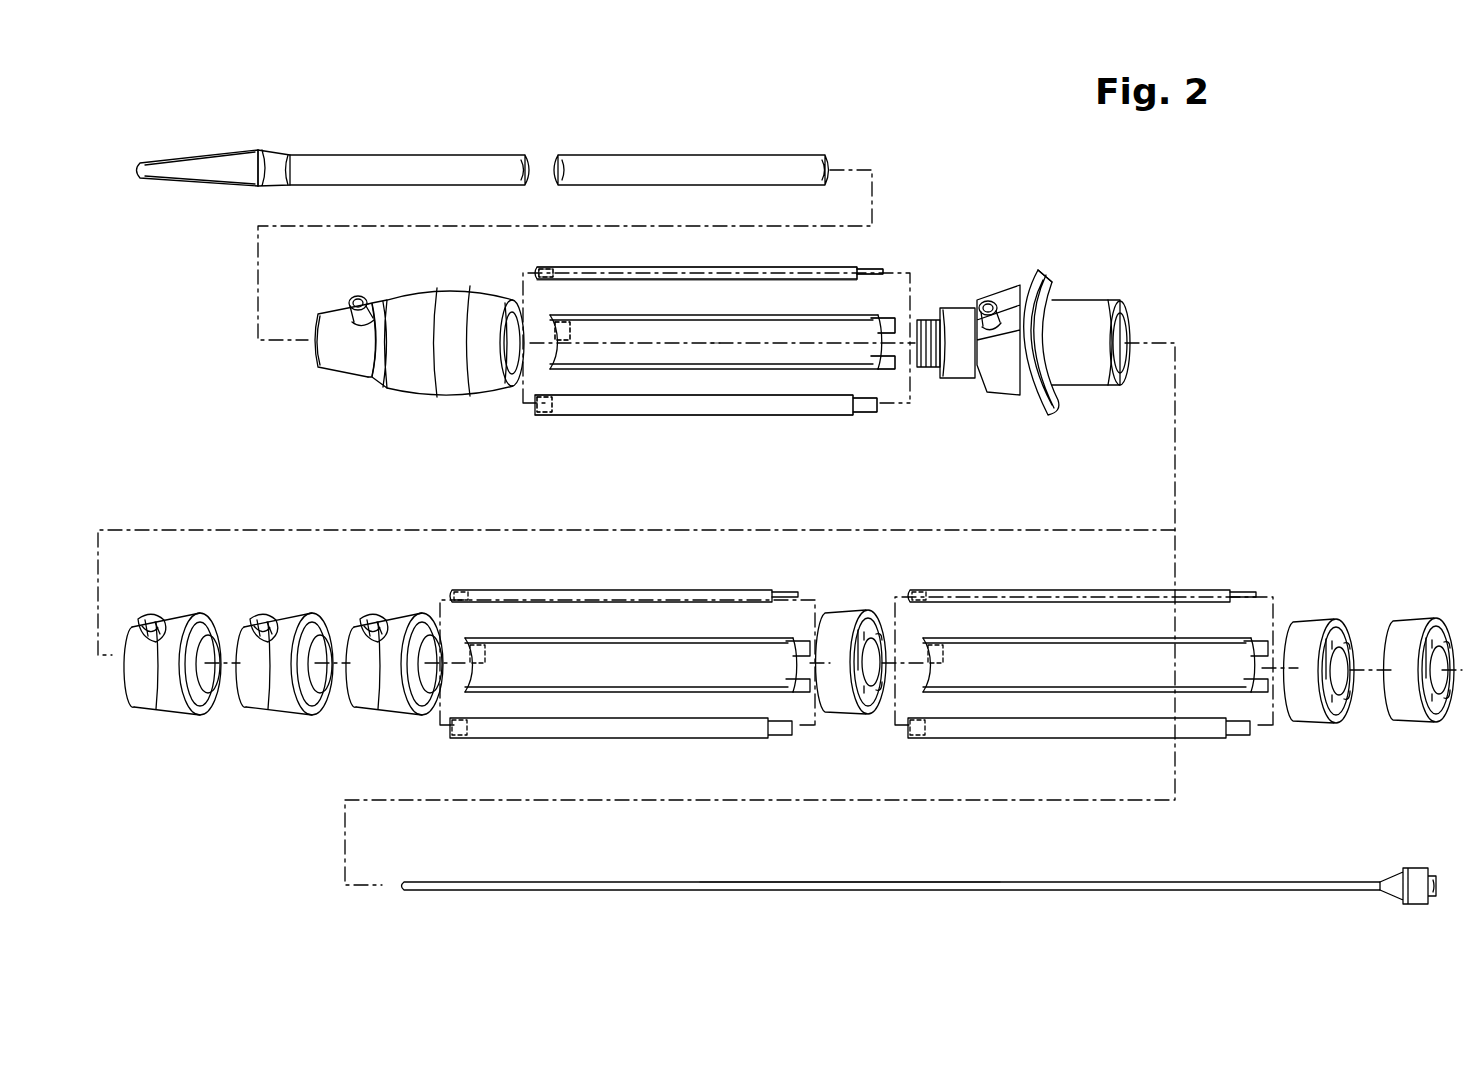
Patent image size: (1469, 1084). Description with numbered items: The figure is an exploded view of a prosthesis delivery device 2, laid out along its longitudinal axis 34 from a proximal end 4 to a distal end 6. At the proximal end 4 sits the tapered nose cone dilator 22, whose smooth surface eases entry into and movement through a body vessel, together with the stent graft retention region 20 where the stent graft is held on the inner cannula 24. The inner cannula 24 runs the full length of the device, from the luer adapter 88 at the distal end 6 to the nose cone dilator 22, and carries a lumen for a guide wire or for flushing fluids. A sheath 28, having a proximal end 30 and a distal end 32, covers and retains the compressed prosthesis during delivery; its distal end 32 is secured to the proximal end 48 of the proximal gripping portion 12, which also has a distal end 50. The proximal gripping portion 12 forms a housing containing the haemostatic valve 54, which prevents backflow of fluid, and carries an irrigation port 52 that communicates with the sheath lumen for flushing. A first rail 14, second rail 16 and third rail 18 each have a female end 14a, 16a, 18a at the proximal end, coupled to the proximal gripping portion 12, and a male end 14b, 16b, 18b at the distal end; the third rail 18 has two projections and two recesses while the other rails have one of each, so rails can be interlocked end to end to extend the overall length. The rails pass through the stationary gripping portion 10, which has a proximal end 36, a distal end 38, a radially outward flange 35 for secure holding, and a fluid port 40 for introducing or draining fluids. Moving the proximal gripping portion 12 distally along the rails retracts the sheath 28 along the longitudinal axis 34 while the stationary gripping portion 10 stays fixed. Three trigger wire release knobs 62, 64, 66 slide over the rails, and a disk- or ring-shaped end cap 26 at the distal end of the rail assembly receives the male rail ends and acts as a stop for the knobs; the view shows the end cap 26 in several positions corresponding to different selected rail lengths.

The delivery device 2 is at (998, 196).
The proximal end 4 is at (180, 157).
The distal end 6 is at (1416, 618).
The stationary gripping portion 10 is at (1045, 351).
The proximal gripping portion 12 is at (411, 341).
The first rail 14 is at (812, 268).
The female end of first rail 14a is at (553, 267).
The male end of first rail 14b is at (880, 270).
The second rail 16 is at (660, 405).
The female end of second rail 16a is at (540, 418).
The male end of second rail 16b is at (870, 412).
The third rail 18 is at (735, 351).
The female end of third rail 18a is at (568, 318).
The male end of third rail 18b is at (885, 360).
The stent graft retention region 20 is at (919, 902).
The nose cone dilator 22 is at (216, 186).
The inner cannula 24 is at (842, 892).
The end cap 26 is at (854, 611).
The sheath 28 is at (470, 157).
The proximal end of sheath 30 is at (290, 158).
The distal end of sheath 32 is at (825, 158).
The longitudinal axis 34 is at (710, 345).
The flange 35 is at (1045, 412).
The proximal end of stationary gripping portion 36 is at (950, 308).
The distal end of stationary gripping portion 38 is at (1123, 300).
The fluid port 40 is at (993, 301).
The proximal end of proximal gripping portion 48 is at (320, 374).
The distal end of proximal gripping portion 50 is at (510, 298).
The irrigation port 52 is at (356, 296).
The haemostatic valve 54 is at (383, 386).
The trigger wire release knob 62 is at (390, 716).
The trigger wire release knob 64 is at (280, 716).
The trigger wire release knob 66 is at (170, 716).
The luer adapter 88 is at (1392, 897).